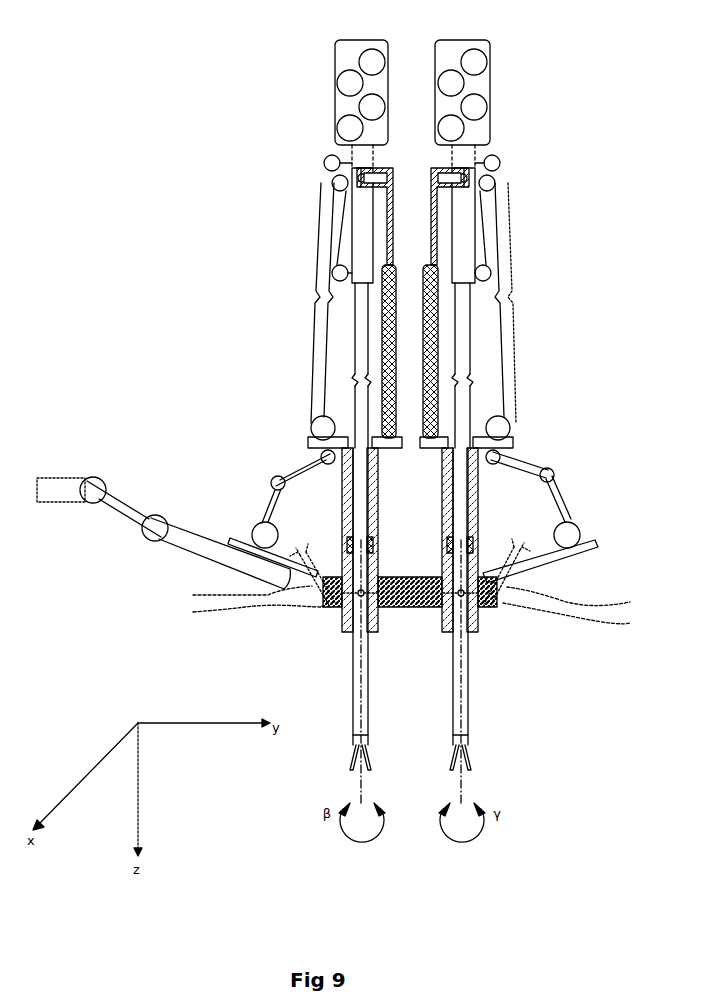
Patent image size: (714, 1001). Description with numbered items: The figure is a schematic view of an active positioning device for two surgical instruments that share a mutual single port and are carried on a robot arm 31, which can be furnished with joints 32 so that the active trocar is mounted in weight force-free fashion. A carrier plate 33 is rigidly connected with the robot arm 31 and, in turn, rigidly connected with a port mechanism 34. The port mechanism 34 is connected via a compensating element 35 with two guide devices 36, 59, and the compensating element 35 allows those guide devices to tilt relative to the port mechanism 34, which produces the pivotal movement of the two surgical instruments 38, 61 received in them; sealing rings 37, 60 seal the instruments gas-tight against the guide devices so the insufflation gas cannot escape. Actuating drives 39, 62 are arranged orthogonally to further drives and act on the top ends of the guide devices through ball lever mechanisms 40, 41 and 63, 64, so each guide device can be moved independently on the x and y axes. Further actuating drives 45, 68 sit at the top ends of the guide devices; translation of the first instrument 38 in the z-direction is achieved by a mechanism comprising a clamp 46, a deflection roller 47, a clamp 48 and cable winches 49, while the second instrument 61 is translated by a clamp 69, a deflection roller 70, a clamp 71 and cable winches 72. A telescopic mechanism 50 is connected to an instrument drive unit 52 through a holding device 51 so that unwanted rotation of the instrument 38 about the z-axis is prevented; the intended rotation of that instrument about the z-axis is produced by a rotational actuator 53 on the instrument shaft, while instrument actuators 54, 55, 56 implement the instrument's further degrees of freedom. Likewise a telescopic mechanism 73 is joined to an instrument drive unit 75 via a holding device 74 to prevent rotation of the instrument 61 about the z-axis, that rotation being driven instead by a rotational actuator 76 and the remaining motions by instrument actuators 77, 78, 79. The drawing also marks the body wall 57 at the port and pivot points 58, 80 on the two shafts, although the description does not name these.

The robot arm 31 is at (185, 548).
The joints 32 is at (113, 480).
The carrier plate 33 is at (286, 570).
The port mechanism 34 is at (310, 560).
The compensating element 35 is at (393, 577).
The guide device 36 is at (380, 495).
The sealing ring 37 is at (372, 530).
The surgical instrument 38 is at (353, 666).
The actuating drive 39 is at (255, 525).
The ball lever mechanism 40 is at (292, 474).
The ball lever mechanism 41 is at (284, 487).
The actuating drive 45 is at (311, 428).
The clamp 46 is at (324, 163).
The deflection roller 47 is at (332, 185).
The clamp 48 is at (338, 281).
The cable winch 49 is at (318, 241).
The telescopic mechanism 50 is at (394, 378).
The holding device 51 is at (374, 171).
The instrument drive unit 52 is at (349, 40).
The rotational actuator 53 is at (359, 62).
The instrument actuator 54 is at (337, 83).
The instrument actuator 55 is at (359, 107).
The instrument actuator 56 is at (337, 128).
The patient body wall 57 is at (222, 607).
The pivot point 58 is at (357, 597).
The guide device 59 is at (444, 478).
The sealing ring 60 is at (452, 548).
The surgical instrument 61 is at (470, 672).
The actuating drive 62 is at (580, 525).
The ball lever mechanism 63 is at (560, 490).
The ball lever mechanism 64 is at (498, 465).
The actuating drive 68 is at (510, 428).
The clamp 69 is at (500, 163).
The deflection roller 70 is at (495, 185).
The clamp 71 is at (484, 281).
The cable winch 72 is at (503, 236).
The telescopic mechanism 73 is at (427, 433).
The holding device 74 is at (450, 171).
The instrument drive unit 75 is at (450, 42).
The rotational actuator 76 is at (487, 62).
The instrument actuator 77 is at (464, 83).
The instrument actuator 78 is at (487, 107).
The instrument actuator 79 is at (464, 128).
The pivot point 80 is at (464, 598).